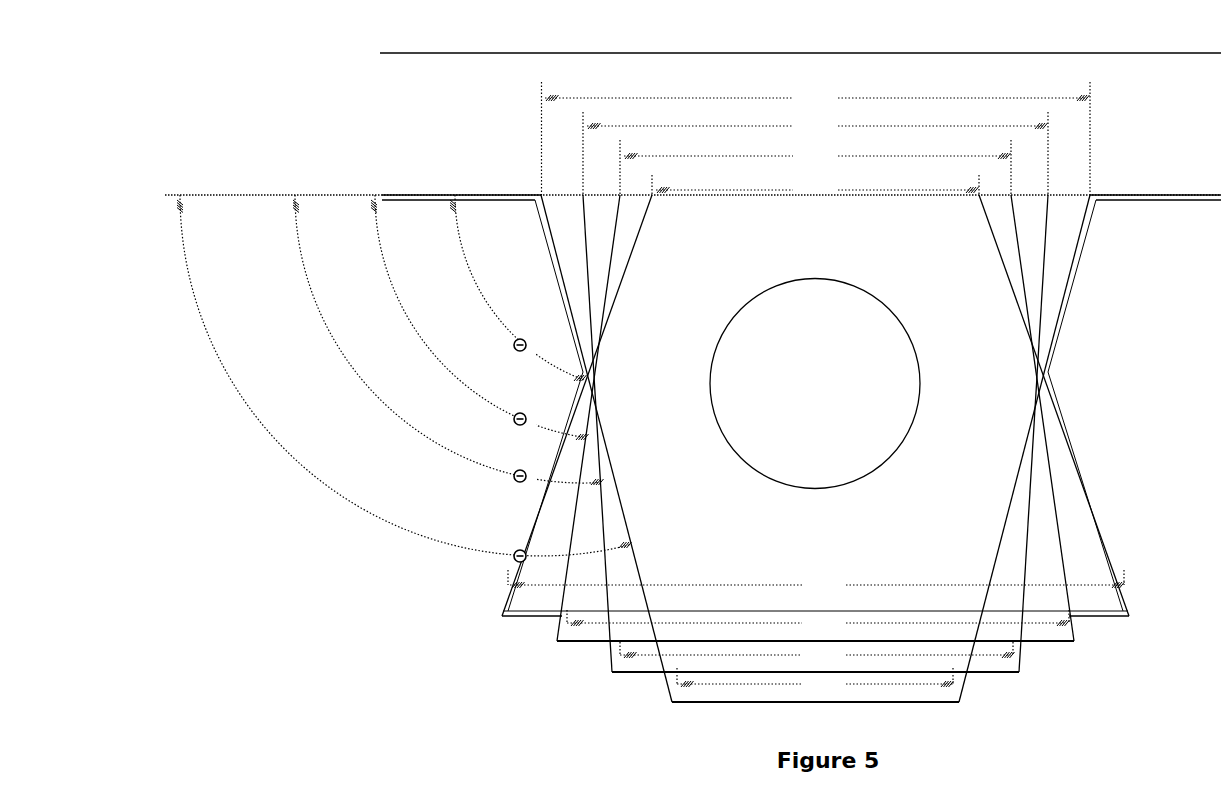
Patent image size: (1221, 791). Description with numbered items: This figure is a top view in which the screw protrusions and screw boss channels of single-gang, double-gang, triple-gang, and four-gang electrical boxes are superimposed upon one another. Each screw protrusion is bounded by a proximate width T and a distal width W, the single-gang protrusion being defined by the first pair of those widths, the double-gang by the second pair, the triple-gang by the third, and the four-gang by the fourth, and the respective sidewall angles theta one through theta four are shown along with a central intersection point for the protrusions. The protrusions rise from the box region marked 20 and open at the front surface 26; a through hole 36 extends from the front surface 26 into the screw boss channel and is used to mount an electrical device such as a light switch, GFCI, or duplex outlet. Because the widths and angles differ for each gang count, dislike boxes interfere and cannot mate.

The substrate 20 is at (1157, 110).
The front surface 26 is at (382, 98).
The through hole 36 is at (780, 362).